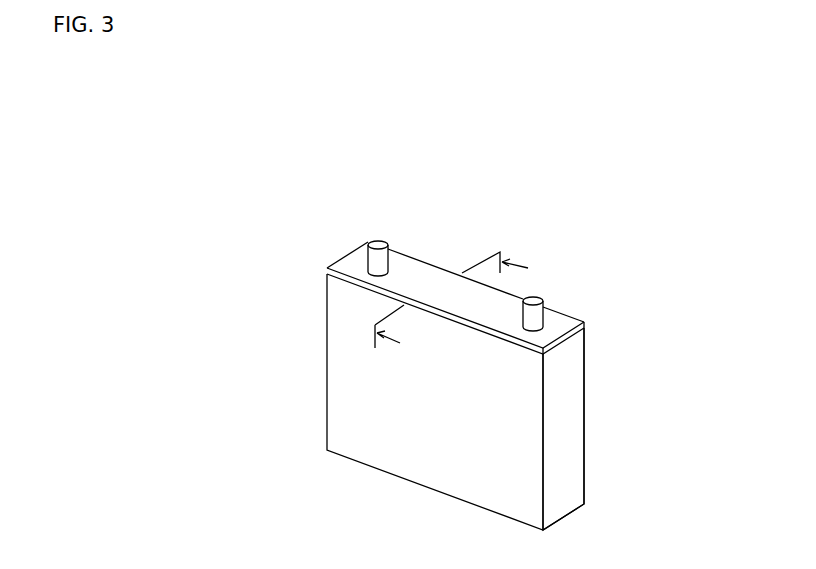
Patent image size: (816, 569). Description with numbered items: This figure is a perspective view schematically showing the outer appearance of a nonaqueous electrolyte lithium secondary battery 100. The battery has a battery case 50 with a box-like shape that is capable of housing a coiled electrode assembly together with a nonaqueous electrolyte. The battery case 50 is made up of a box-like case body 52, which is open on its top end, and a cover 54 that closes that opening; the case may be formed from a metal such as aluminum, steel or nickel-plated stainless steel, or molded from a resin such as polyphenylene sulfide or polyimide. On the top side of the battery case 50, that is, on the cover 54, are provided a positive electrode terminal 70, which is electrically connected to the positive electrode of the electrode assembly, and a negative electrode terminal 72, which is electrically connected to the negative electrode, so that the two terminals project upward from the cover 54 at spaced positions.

The lithium secondary battery 100 is at (464, 339).
The battery case 50 is at (327, 408).
The case body 52 is at (580, 387).
The cover 54 is at (583, 322).
The positive electrode terminal 70 is at (535, 298).
The negative electrode terminal 72 is at (378, 242).